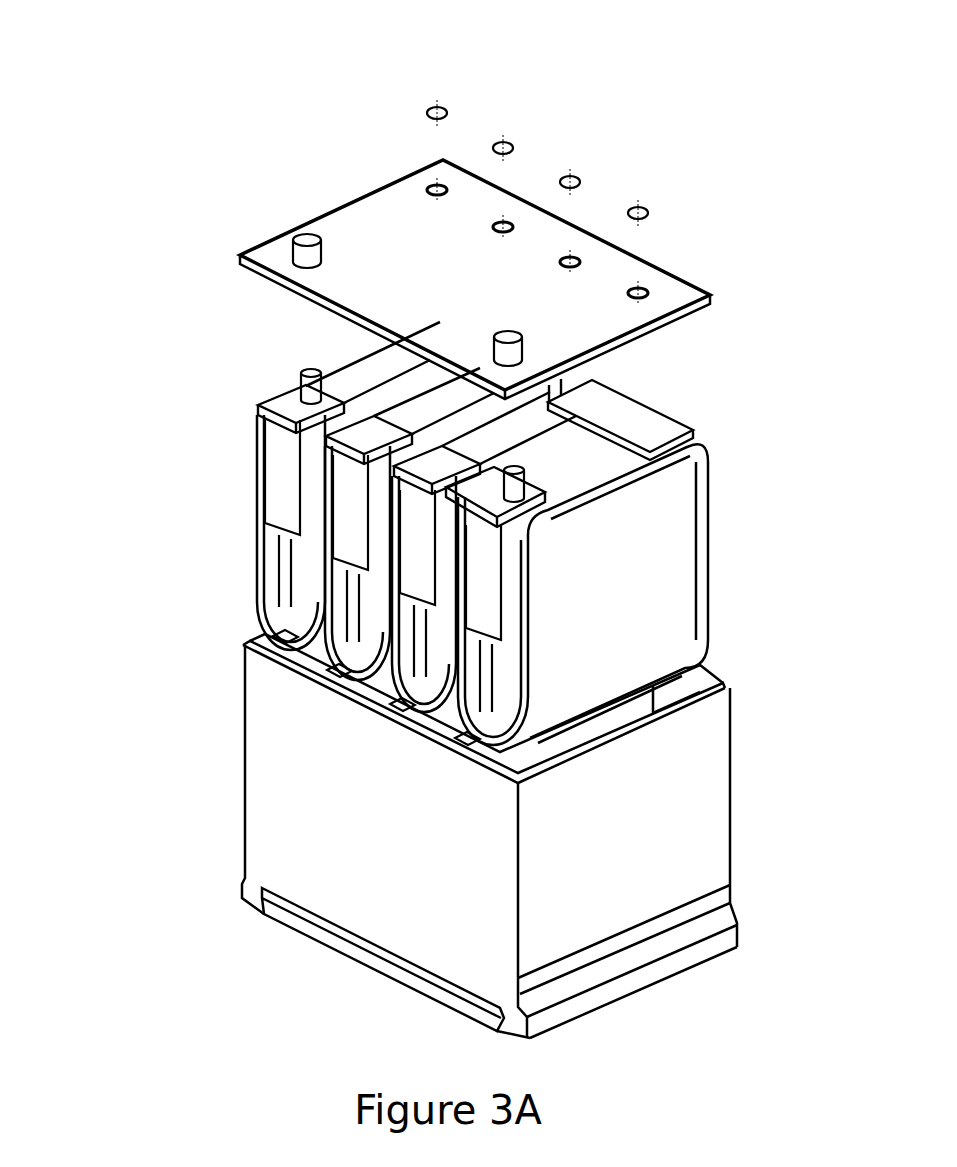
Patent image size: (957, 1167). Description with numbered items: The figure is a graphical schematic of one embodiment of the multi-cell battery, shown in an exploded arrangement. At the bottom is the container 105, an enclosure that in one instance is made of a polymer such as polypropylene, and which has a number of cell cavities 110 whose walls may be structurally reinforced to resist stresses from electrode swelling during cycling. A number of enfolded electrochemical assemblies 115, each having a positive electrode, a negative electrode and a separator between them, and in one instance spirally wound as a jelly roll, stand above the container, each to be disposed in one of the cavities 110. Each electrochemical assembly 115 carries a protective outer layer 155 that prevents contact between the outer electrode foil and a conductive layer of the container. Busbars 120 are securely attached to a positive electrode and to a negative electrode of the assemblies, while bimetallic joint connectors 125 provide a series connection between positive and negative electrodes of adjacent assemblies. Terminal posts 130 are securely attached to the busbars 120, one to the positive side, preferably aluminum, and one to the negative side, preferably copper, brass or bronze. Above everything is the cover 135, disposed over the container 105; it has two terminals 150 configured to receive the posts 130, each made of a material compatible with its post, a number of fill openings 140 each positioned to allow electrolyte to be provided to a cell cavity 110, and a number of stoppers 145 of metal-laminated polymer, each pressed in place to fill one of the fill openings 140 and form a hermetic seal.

The container 105 is at (730, 787).
The cell cavities 110 is at (473, 769).
The enfolded electrochemical assemblies 115 is at (476, 697).
The busbars 120 is at (448, 494).
The bimetallic joint connectors 125 is at (440, 433).
The terminal posts 130 is at (297, 360).
The cover 135 is at (256, 252).
The fill openings 140 is at (451, 192).
The stoppers 145 is at (455, 104).
The terminals 150 is at (498, 328).
The protective outer layer 155 is at (647, 583).